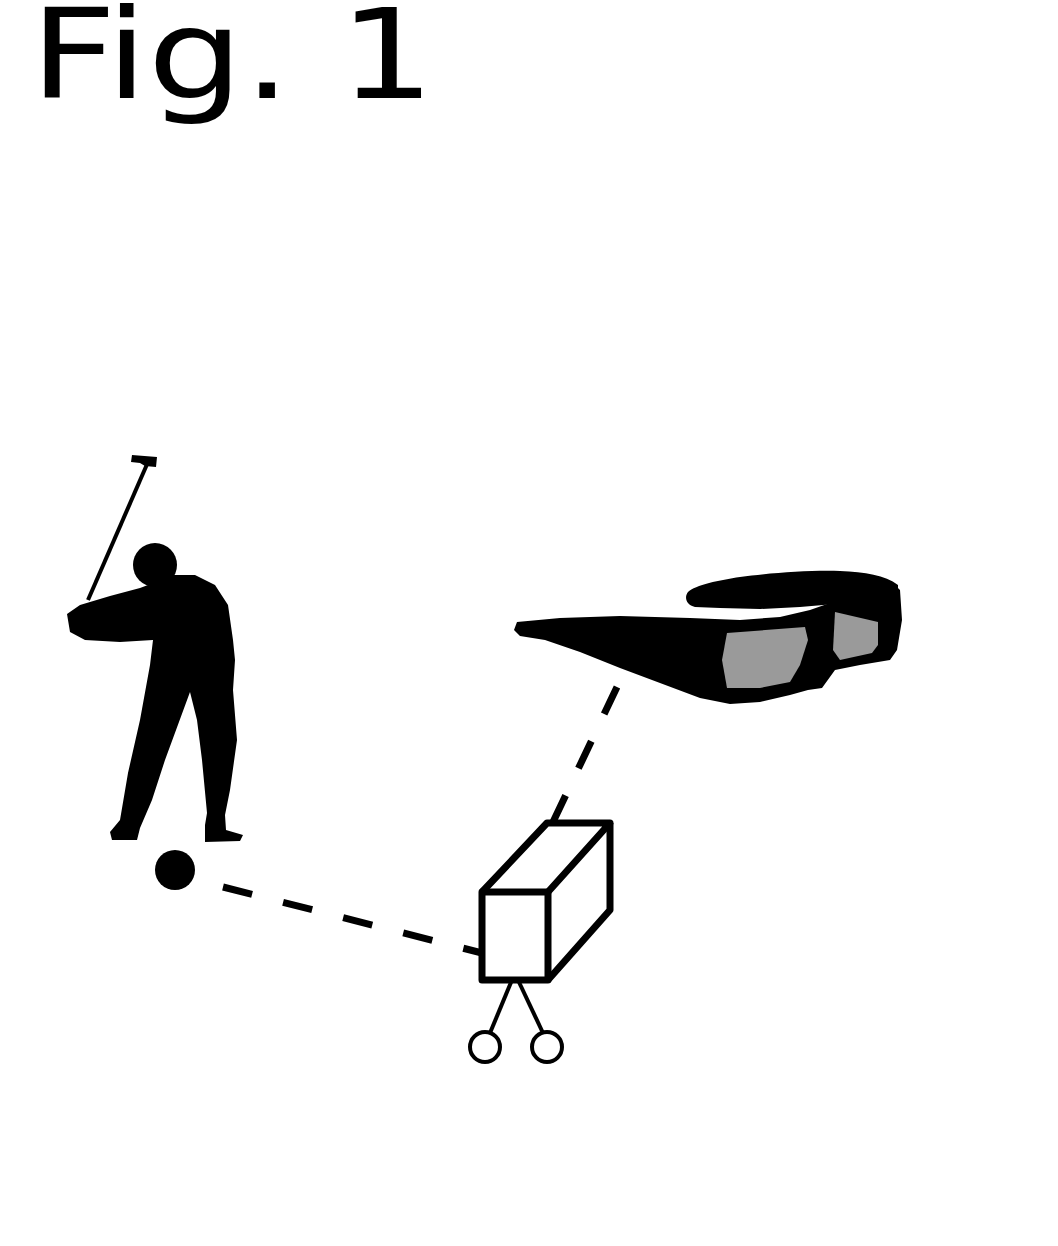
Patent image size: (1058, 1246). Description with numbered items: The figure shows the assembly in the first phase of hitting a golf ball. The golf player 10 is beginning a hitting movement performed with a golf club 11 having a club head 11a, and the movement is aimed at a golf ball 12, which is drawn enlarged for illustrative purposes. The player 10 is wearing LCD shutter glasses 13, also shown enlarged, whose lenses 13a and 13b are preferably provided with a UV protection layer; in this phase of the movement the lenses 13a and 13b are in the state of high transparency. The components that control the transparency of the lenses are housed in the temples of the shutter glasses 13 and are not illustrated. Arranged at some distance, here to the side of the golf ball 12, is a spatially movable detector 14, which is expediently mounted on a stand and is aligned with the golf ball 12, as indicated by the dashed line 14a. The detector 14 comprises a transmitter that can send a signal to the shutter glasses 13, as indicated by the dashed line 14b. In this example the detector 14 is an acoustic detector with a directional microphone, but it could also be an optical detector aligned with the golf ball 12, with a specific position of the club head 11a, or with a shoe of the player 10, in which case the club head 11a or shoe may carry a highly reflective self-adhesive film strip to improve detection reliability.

The golf player 10 is at (217, 588).
The golf club 11 is at (120, 510).
The club head 11a is at (153, 454).
The golf ball 12 is at (155, 876).
The LCD shutter glasses 13 is at (723, 625).
The lens 13a is at (772, 677).
The lens 13b is at (863, 643).
The detector 14 is at (612, 897).
The dashed line 14a is at (268, 902).
The dashed line 14b is at (576, 772).